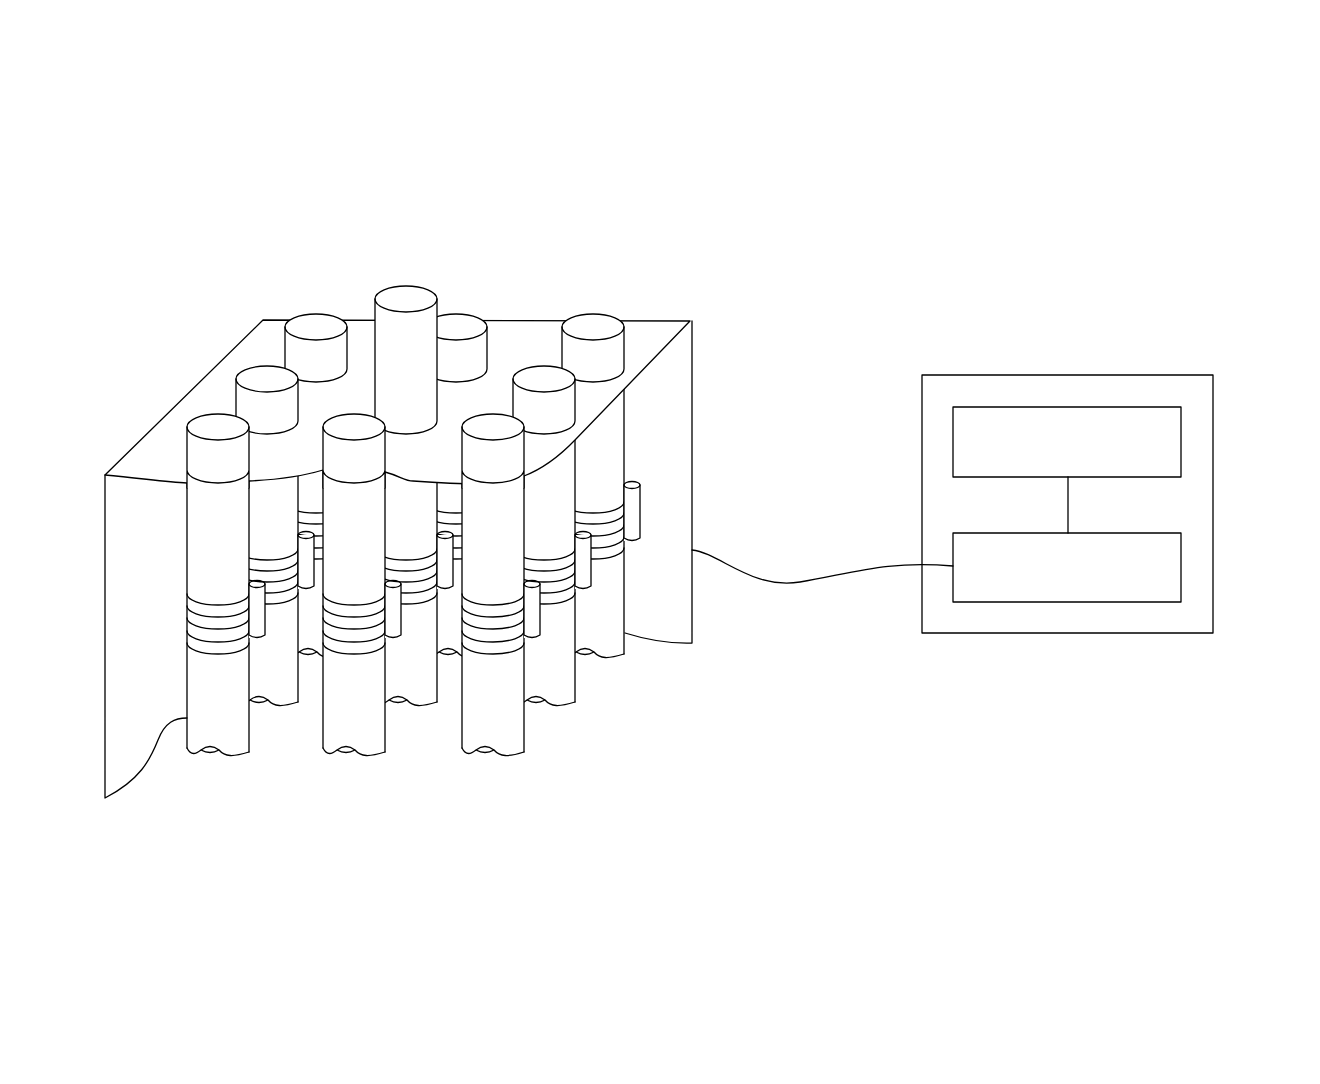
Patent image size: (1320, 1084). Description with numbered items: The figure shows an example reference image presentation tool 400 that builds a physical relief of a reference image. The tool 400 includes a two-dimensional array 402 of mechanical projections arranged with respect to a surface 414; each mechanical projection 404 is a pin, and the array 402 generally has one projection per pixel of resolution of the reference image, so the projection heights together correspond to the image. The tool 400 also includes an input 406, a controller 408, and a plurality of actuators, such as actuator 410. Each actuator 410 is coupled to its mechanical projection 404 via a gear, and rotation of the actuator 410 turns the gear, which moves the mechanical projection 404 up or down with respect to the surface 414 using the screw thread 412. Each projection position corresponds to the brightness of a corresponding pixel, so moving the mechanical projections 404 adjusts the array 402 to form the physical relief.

The reference image presentation tool 400 is at (1193, 133).
The two-dimensional array 402 is at (489, 618).
The mechanical projection 404 is at (387, 292).
The input 406 is at (1181, 468).
The controller 408 is at (1181, 594).
The actuator 410 is at (640, 483).
The screw thread 412 is at (590, 503).
The surface 414 is at (203, 387).